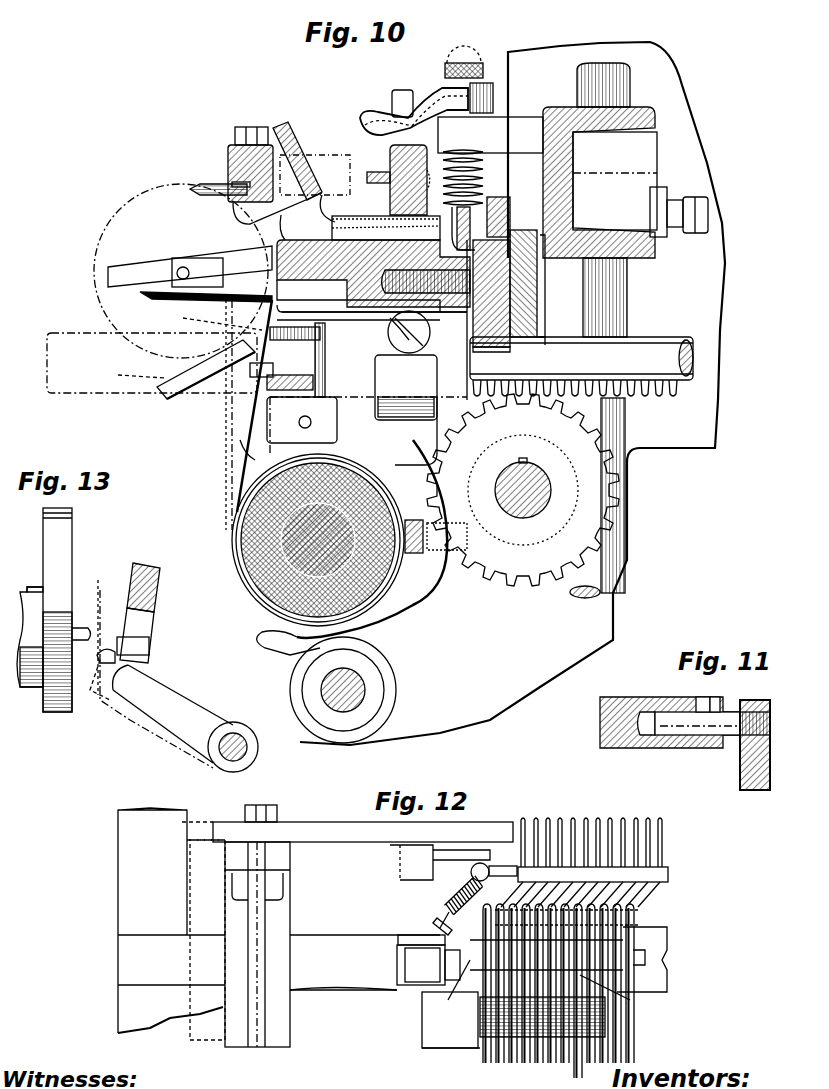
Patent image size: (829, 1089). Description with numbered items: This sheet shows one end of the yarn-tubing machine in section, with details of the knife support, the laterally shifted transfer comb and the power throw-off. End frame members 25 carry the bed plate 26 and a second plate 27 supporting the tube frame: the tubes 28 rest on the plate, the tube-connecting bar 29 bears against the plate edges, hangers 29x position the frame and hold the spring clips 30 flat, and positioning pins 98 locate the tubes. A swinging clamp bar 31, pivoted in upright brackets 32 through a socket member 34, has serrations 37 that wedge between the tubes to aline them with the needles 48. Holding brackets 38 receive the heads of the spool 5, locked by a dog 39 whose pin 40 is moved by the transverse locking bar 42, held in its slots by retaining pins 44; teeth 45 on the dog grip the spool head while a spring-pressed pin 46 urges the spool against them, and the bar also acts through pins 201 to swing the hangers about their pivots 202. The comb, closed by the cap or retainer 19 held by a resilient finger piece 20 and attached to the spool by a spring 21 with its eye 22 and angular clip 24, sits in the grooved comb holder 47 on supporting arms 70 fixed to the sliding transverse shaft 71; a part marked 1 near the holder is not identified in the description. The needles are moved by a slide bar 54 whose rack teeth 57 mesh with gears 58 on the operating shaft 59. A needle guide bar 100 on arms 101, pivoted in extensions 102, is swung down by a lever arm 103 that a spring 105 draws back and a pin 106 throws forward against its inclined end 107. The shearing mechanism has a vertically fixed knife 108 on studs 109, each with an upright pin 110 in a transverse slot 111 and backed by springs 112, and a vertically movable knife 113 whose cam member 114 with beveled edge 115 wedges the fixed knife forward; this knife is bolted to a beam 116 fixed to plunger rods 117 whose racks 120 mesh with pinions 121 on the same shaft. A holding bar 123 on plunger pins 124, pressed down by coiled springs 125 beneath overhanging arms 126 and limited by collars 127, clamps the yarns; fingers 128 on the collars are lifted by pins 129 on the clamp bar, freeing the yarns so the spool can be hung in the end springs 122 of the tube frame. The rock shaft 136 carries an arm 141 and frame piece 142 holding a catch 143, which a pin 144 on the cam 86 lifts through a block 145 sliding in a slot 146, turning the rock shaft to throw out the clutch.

In FIG. 10, the needle butt 1 is at (232, 184).
In FIG. 10, the spool 5 is at (236, 556).
In FIG. 10, the cap piece or retainer 19 is at (195, 190).
In FIG. 12, the cap piece or retainer 19 is at (668, 878).
In FIG. 12, the resilient finger piece 20 is at (474, 865).
In FIG. 12, the spring 21 is at (446, 900).
In FIG. 12, the eye 22 is at (440, 926).
In FIG. 12, the angular clip 24 is at (398, 940).
In FIG. 10, the end frame members 25 is at (490, 715).
In FIG. 12, the end frame members 25 is at (125, 887).
In FIG. 10, the bed piece or plate 26 is at (460, 322).
In FIG. 11, the bed piece or plate 26 is at (600, 722).
In FIG. 12, the bed piece or plate 26 is at (328, 995).
In FIG. 10, the second plate 27 is at (375, 228).
In FIG. 10, the tubes 28 is at (345, 232).
In FIG. 12, the tubes 28 is at (645, 905).
In FIG. 10, the tube-connecting bar 29 is at (300, 240).
In FIG. 12, the tube-connecting bar 29 is at (660, 938).
In FIG. 10, the brackets or hangers 29x is at (330, 340).
In FIG. 12, the brackets or hangers 29x is at (625, 1000).
In FIG. 10, the spring clips 30 is at (290, 247).
In FIG. 12, the spring clips 30 is at (460, 985).
In FIG. 10, the swinging clamp bar 31 is at (392, 165).
In FIG. 10, the upright brackets 32 is at (362, 125).
In FIG. 10, the socket member 34 is at (458, 148).
In FIG. 10, the teeth or serrations 37 is at (478, 238).
In FIG. 10, the holding brackets 38 is at (420, 600).
In FIG. 12, the holding brackets 38 is at (440, 1050).
In FIG. 10, the locking dog or shoe 39 is at (240, 448).
In FIG. 10, the pin 40 is at (302, 420).
In FIG. 10, the transverse locking bar 42 is at (268, 385).
In FIG. 10, the removable retaining pins 44 is at (252, 372).
In FIG. 10, the teeth 45 is at (245, 465).
In FIG. 10, the spring-pressed pin 46 is at (435, 582).
In FIG. 10, the grooved comb holder 47 is at (228, 160).
In FIG. 12, the grooved comb holder 47 is at (480, 840).
In FIG. 12, the needles 48 is at (640, 917).
In FIG. 10, the slide bar 54 is at (660, 352).
In FIG. 10, the rack teeth 57 is at (640, 396).
In FIG. 10, the gears 58 is at (522, 590).
In FIG. 10, the operating shaft 59 is at (540, 490).
In FIG. 10, the upright supporting arms 70 is at (290, 650).
In FIG. 12, the upright supporting arms 70 is at (285, 922).
In FIG. 10, the transverse shaft 71 is at (365, 693).
In FIG. 13, the cam 86 is at (50, 537).
In FIG. 12, the upright positioning pins 98 is at (435, 995).
In FIG. 10, the needle guide bar 100 is at (285, 118).
In FIG. 10, the arms 101 is at (235, 238).
In FIG. 10, the extensions 102 is at (367, 178).
In FIG. 10, the depending lever arm 103 is at (235, 223).
In FIG. 10, the spring 105 is at (183, 318).
In FIG. 10, the pin 106 is at (139, 374).
In FIG. 10, the inclined end 107 is at (90, 342).
In FIG. 10, the vertically fixed knife 108 is at (500, 348).
In FIG. 11, the vertically fixed knife 108 is at (748, 763).
In FIG. 11, the studs 109 is at (707, 728).
In FIG. 11, the upright pin 110 is at (712, 700).
In FIG. 11, the transverse slot 111 is at (700, 700).
In FIG. 10, the springs 112 is at (515, 300).
In FIG. 10, the vertically movable knife 113 is at (510, 278).
In FIG. 10, the cam member 114 is at (520, 315).
In FIG. 10, the lower beveled edge 115 is at (512, 330).
In FIG. 10, the transverse supporting beam 116 is at (640, 262).
In FIG. 10, the plunger rod 117 is at (612, 291).
In FIG. 10, the rack 120 is at (578, 596).
In FIG. 10, the pinion 121 is at (548, 537).
In FIG. 10, the end springs 122 is at (145, 268).
In FIG. 12, the end springs 122 is at (397, 956).
In FIG. 10, the holding bar 123 is at (470, 232).
In FIG. 10, the vertical plunger pins 124 is at (470, 160).
In FIG. 10, the coiled spring 125 is at (480, 195).
In FIG. 10, the overhanging supporting arm 126 is at (545, 122).
In FIG. 10, the collar 127 is at (450, 85).
In FIG. 10, the forwardly directed finger 128 is at (392, 105).
In FIG. 10, the projecting pins 129 is at (365, 168).
In FIG. 13, the rock shaft 136 is at (235, 740).
In FIG. 13, the arm 141 is at (190, 708).
In FIG. 13, the small frame piece 142 is at (147, 572).
In FIG. 13, the catch 143 is at (108, 660).
In FIG. 13, the pin 144 is at (80, 625).
In FIG. 13, the block 145 is at (150, 646).
In FIG. 13, the slot 146 is at (148, 630).
In FIG. 10, the pin 201 is at (360, 366).
In FIG. 12, the pin 201 is at (572, 1072).
In FIG. 10, the pivot 202 is at (413, 382).